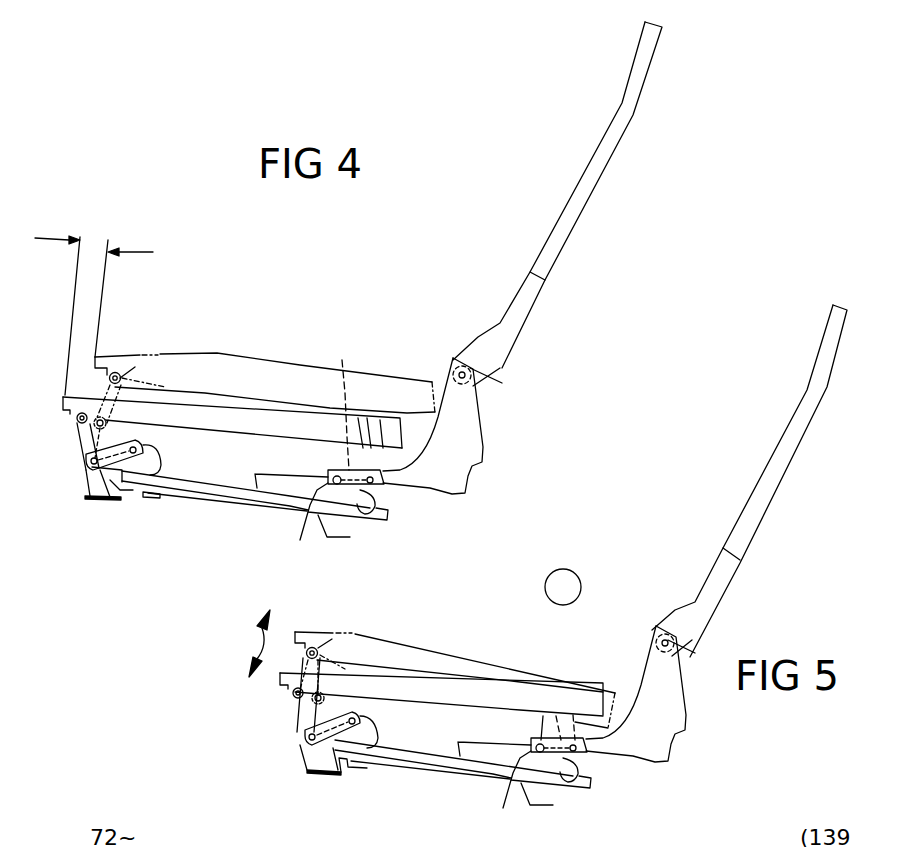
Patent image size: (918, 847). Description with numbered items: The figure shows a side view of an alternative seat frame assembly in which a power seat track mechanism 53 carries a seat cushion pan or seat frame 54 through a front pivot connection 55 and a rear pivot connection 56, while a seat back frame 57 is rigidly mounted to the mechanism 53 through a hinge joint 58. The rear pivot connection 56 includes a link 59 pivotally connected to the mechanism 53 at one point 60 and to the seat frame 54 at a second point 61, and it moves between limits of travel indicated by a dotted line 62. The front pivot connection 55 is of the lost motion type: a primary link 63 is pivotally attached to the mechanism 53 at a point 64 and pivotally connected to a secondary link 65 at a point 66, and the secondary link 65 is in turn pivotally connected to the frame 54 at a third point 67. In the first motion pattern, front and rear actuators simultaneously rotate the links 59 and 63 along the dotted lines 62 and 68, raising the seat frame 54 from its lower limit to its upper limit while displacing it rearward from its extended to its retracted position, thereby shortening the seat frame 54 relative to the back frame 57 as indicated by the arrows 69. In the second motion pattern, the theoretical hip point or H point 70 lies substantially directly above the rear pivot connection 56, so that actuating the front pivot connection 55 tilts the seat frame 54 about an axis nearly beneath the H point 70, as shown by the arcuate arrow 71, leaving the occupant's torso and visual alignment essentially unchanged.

In FIG. 4, the power seat track mechanism 53 is at (409, 527).
In FIG. 5, the power seat track mechanism 53 is at (612, 792).
In FIG. 4, the seat frame 54 is at (222, 410).
In FIG. 5, the seat frame 54 is at (457, 683).
In FIG. 4, the front pivot connection 55 is at (69, 481).
In FIG. 5, the front pivot connection 55 is at (300, 762).
In FIG. 4, the rear pivot connection 56 is at (377, 545).
In FIG. 5, the rear pivot connection 56 is at (587, 804).
In FIG. 4, the seat back frame 57 is at (567, 227).
In FIG. 5, the seat back frame 57 is at (748, 514).
In FIG. 4, the hinge joint 58 is at (470, 372).
In FIG. 5, the hinge joint 58 is at (660, 643).
In FIG. 4, the link 59 is at (388, 496).
In FIG. 4, the pivot point 60 is at (462, 493).
In FIG. 5, the pivot point 60 is at (679, 760).
In FIG. 4, the second pivot point 61 is at (310, 537).
In FIG. 5, the second pivot point 61 is at (518, 781).
In FIG. 4, the dotted line 62 is at (356, 402).
In FIG. 4, the primary link 63 is at (120, 494).
In FIG. 4, the pivot point 64 is at (142, 440).
In FIG. 5, the pivot point 64 is at (360, 715).
In FIG. 4, the secondary link 65 is at (77, 430).
In FIG. 5, the secondary link 65 is at (297, 707).
In FIG. 4, the pivot point 66 is at (88, 500).
In FIG. 5, the pivot point 66 is at (300, 740).
In FIG. 4, the third pivot point 67 is at (72, 413).
In FIG. 5, the third pivot point 67 is at (293, 693).
In FIG. 4, the dotted line 68 is at (77, 446).
In FIG. 4, the arrows 69 is at (112, 315).
In FIG. 5, the H point 70 is at (581, 580).
In FIG. 5, the arcuate arrow 71 is at (255, 642).